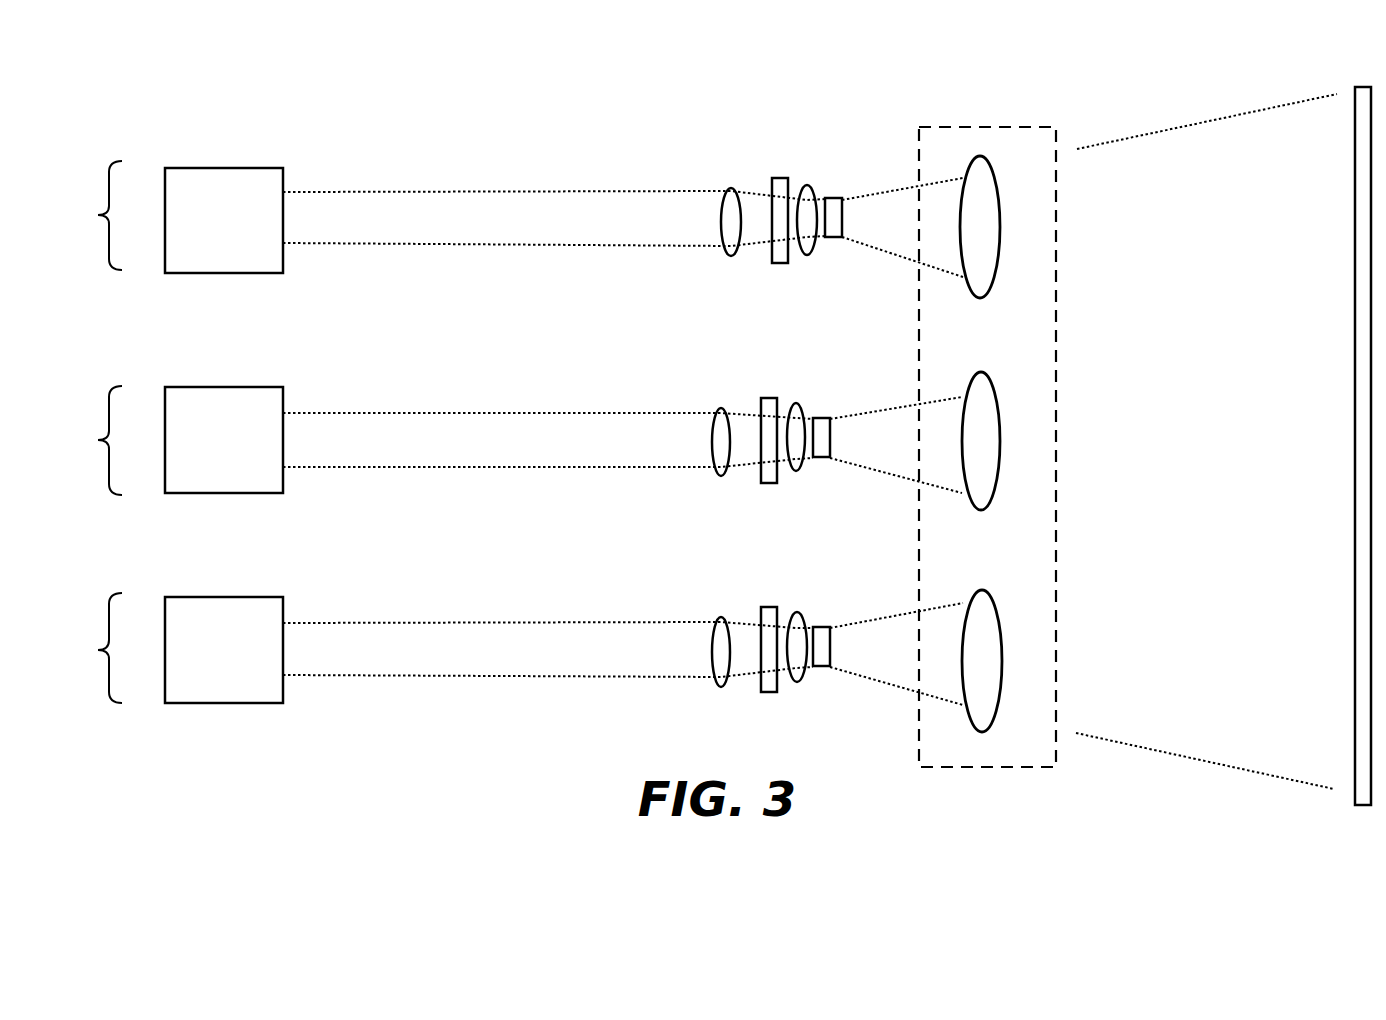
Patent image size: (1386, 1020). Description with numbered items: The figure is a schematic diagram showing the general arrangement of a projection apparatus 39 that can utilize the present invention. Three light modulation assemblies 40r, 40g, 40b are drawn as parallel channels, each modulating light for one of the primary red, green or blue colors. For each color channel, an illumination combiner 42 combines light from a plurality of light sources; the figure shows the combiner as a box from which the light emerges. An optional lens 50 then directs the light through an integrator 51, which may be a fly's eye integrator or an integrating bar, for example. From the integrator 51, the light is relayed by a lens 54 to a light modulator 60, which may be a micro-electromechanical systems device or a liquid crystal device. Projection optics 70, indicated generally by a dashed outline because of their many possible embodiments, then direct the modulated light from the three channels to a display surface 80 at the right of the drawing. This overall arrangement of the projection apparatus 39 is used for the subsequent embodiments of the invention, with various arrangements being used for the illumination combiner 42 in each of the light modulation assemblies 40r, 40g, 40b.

The projection apparatus 39 is at (530, 115).
The light modulation assembly 40r is at (162, 193).
The light modulation assembly 40g is at (161, 440).
The light modulation assembly 40b is at (160, 648).
The illumination combiner 42 is at (246, 168).
The lens 50 is at (731, 189).
The integrator 51 is at (778, 264).
The lens 54 is at (815, 249).
The light modulator 60 is at (828, 197).
The projection optics 70 is at (983, 127).
The display surface 80 is at (1355, 637).